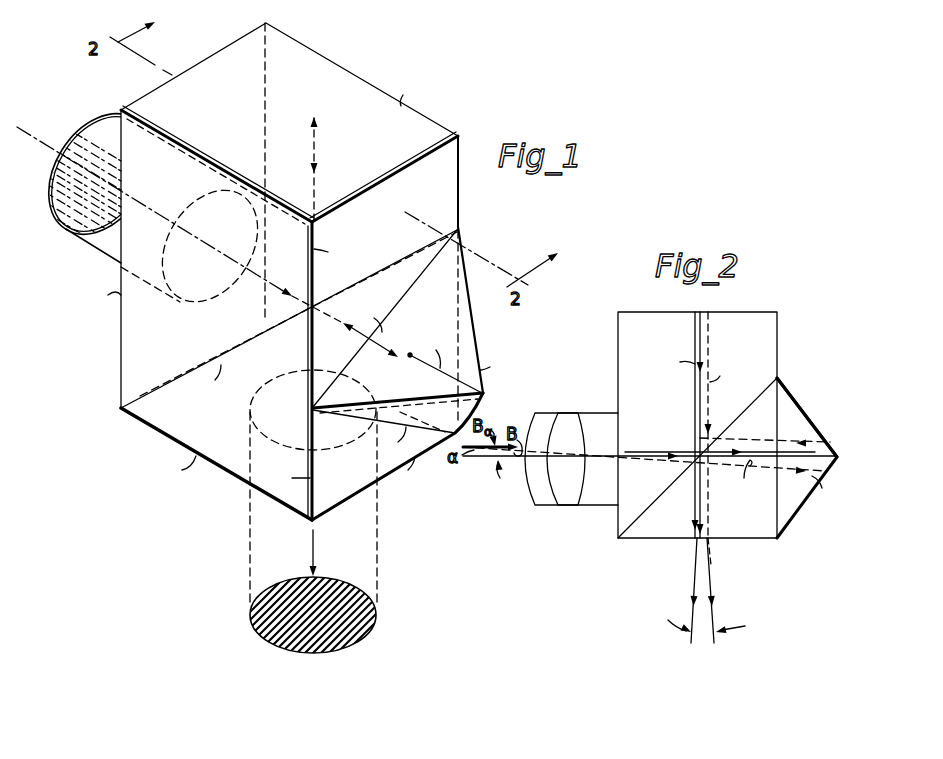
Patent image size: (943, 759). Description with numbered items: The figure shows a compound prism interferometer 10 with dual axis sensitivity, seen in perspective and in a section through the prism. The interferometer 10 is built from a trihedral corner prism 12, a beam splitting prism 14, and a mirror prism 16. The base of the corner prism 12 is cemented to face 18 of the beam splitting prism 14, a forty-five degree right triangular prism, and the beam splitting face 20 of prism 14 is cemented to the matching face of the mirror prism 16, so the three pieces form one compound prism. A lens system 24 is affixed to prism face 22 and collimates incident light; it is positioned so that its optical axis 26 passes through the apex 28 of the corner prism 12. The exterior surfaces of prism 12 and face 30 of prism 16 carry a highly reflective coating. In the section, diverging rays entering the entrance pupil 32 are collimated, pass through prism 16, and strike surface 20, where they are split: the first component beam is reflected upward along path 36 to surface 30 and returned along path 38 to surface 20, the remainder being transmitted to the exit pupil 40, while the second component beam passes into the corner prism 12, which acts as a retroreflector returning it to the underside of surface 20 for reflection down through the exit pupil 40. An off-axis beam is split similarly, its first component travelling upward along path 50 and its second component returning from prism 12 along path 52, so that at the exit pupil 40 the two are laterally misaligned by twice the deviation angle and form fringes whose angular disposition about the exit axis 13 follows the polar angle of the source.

In FIG. 1, the compound prism interferometer 10 is at (92, 414).
In FIG. 1, the trihedral prism 12 is at (473, 337).
In FIG. 2, the trihedral prism 12 is at (822, 441).
In FIG. 1, the exit axis 13 is at (333, 543).
In FIG. 1, the beam splitting prism 14 is at (148, 427).
In FIG. 1, the mirror prism 16 is at (340, 63).
In FIG. 2, the mirror prism 16 is at (777, 340).
In FIG. 1, the face of beam splitter prism 18 is at (350, 497).
In FIG. 1, the beam splitting face 20 is at (181, 374).
In FIG. 2, the beam splitting face 20 is at (773, 379).
In FIG. 1, the prism face 22 is at (121, 371).
In FIG. 1, the lens system 24 is at (80, 243).
In FIG. 2, the lens system 24 is at (572, 421).
In FIG. 1, the optical axis 26 is at (58, 150).
In FIG. 2, the optical axis 26 is at (477, 460).
In FIG. 1, the apex of corner prism 28 is at (485, 394).
In FIG. 1, the face of mirror prism 30 is at (211, 56).
In FIG. 2, the face of mirror prism 30 is at (758, 311).
In FIG. 2, the entrance pupil 32 is at (527, 492).
In FIG. 2, the path of reflected rays B1 36 is at (695, 331).
In FIG. 2, the return path of rays B1 38 is at (695, 402).
In FIG. 2, the exit pupil 40 is at (695, 538).
In FIG. 2, the path of rays B1α 50 is at (713, 348).
In FIG. 2, the path of rays B2α 52 is at (800, 430).